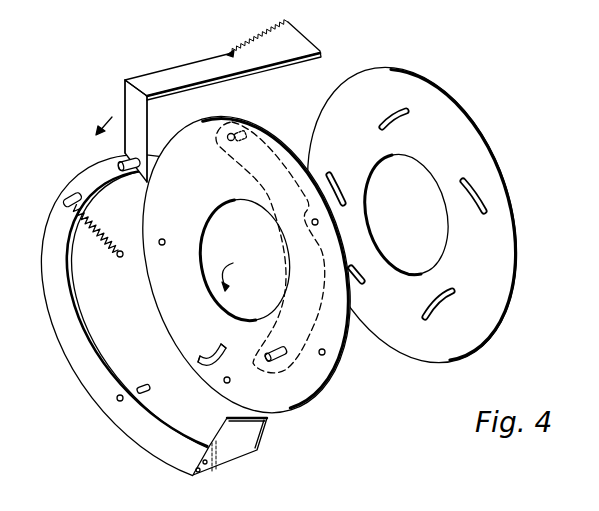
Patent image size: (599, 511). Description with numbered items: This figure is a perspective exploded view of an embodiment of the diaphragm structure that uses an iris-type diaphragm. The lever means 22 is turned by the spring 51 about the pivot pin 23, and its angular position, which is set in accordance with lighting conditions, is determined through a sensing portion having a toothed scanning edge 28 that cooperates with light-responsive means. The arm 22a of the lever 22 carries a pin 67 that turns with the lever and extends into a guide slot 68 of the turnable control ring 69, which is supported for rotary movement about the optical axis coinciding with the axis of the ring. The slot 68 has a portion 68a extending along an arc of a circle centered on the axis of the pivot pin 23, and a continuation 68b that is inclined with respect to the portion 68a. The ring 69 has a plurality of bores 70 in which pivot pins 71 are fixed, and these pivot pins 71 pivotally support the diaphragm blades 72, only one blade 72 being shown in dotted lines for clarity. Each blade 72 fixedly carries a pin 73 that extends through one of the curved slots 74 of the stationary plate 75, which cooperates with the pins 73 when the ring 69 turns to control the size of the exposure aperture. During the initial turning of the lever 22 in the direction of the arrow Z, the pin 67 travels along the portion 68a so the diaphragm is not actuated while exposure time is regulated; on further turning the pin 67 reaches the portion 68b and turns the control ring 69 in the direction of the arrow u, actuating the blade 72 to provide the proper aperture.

The lever means 22 is at (75, 182).
The arm of the lever 22a is at (138, 427).
The pivot pin 23 is at (119, 162).
The scanning edge 28 is at (262, 42).
The spring 51 is at (104, 225).
The pin 67 is at (145, 385).
The guide slot 68 is at (217, 371).
The arcuate slot portion 68a is at (198, 356).
The inclined slot portion 68b is at (226, 348).
The control ring 69 is at (327, 378).
The bores 70 is at (231, 133).
The pivot pins 71 is at (241, 134).
The diaphragm blade 72 is at (305, 318).
The pin 73 is at (283, 368).
The curved slots 74 is at (478, 193).
The stationary plate 75 is at (496, 284).
The arrow z Z is at (103, 116).
The arrow u is at (235, 271).